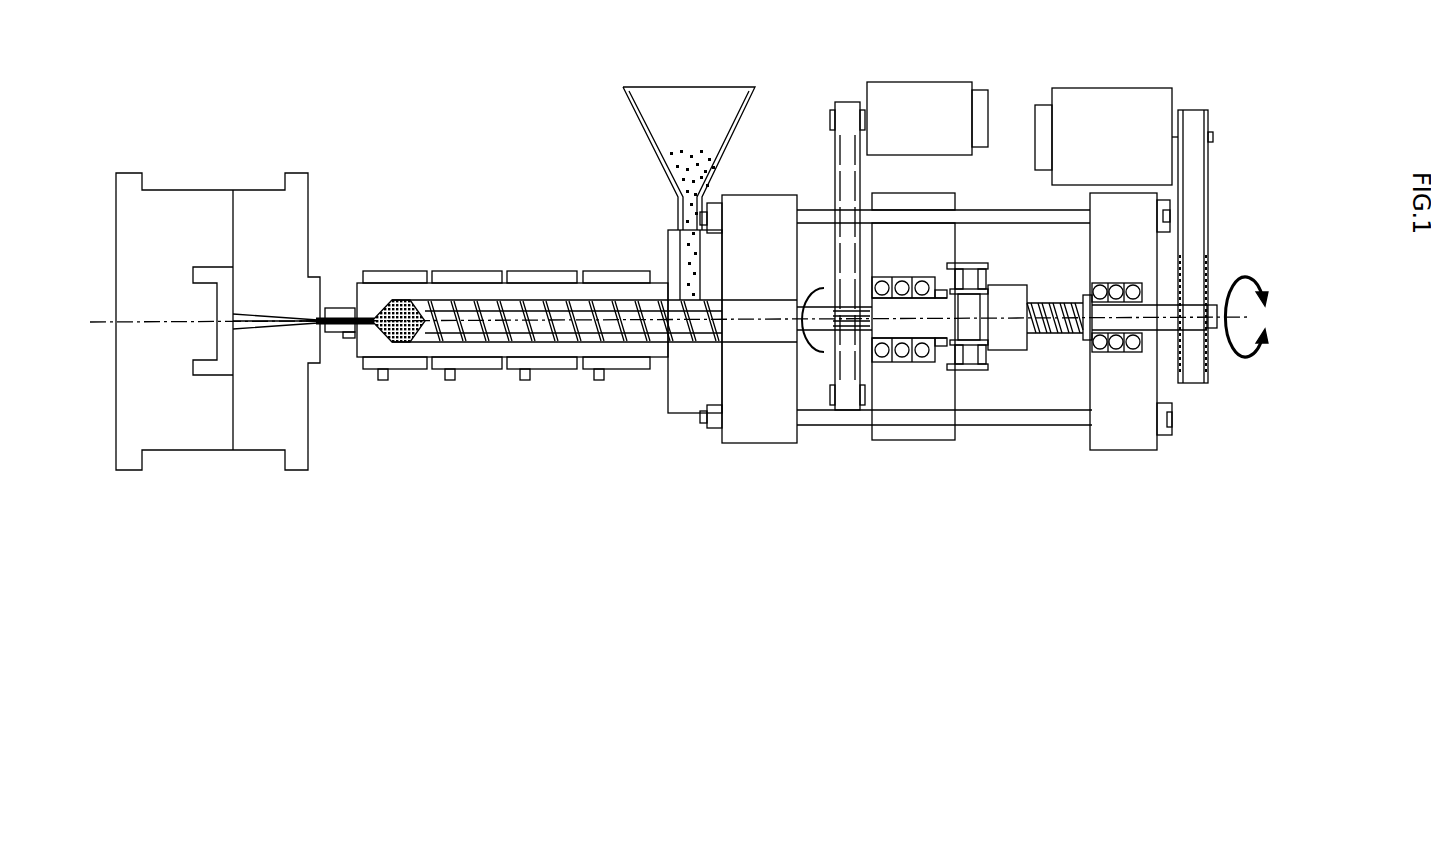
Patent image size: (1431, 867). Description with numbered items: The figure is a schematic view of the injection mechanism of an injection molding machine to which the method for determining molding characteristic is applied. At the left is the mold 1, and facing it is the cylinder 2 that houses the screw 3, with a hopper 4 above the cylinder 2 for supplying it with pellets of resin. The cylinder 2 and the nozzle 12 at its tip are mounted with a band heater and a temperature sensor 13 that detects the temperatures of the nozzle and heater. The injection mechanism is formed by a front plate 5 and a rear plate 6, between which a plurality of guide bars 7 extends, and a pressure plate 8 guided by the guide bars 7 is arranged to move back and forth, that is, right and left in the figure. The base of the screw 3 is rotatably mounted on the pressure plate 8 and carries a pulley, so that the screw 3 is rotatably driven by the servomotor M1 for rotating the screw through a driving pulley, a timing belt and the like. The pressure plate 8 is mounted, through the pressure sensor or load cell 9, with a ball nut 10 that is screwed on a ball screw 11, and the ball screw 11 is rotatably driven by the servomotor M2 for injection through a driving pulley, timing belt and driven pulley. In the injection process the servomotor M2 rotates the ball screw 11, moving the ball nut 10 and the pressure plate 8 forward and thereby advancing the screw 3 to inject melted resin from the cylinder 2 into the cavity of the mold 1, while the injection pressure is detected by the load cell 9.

The mold 1 is at (208, 190).
The cylinder 2 is at (492, 270).
The screw 3 is at (628, 327).
The hopper 4 is at (645, 129).
The front plate 5 is at (756, 432).
The rear plate 6 is at (1122, 440).
The guide bars 7 is at (972, 217).
The pressure plate 8 is at (893, 433).
The pressure sensor (load cell) 9 is at (960, 328).
The ball nut 10 is at (1022, 347).
The ball screw 11 is at (1058, 337).
The nozzle 12 is at (327, 336).
The temperature sensor 13 is at (598, 381).
The servomotor for rotating the screw M1 is at (920, 82).
The servomotor for injection M2 is at (1097, 88).